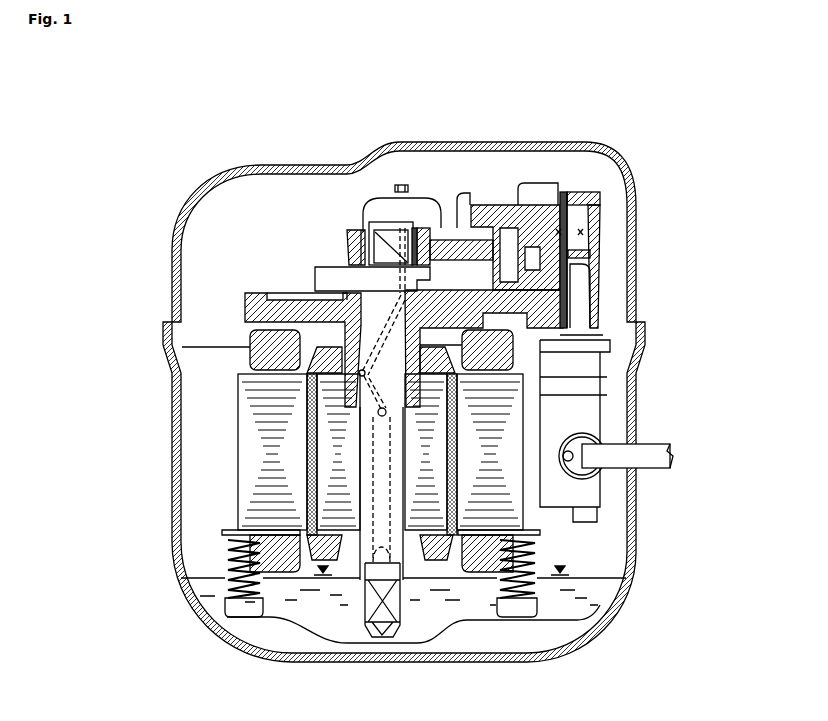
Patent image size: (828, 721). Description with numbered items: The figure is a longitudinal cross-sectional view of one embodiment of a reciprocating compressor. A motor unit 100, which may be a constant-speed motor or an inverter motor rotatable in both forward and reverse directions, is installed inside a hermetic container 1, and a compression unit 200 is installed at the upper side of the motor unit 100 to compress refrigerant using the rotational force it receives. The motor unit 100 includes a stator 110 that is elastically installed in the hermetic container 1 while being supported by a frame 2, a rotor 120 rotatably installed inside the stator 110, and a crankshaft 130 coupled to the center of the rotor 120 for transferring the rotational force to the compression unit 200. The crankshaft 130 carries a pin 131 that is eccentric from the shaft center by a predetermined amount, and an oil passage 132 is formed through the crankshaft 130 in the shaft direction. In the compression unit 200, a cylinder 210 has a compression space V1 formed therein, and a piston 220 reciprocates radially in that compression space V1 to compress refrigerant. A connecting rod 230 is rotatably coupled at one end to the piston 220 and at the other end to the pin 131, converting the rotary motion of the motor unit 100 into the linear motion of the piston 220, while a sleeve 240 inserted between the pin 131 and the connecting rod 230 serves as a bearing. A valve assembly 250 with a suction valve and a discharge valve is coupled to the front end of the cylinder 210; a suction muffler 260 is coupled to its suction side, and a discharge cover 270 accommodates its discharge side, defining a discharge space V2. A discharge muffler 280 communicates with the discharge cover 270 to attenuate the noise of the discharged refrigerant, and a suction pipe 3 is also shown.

The hermetic container 1 is at (222, 188).
The frame 2 is at (250, 355).
The suction pipe 3 is at (645, 446).
The motor unit 100 is at (299, 464).
The stator 110 is at (250, 453).
The rotor 120 is at (320, 479).
The crankshaft 130 is at (266, 464).
The pin 131 is at (378, 252).
The oil passage 132 is at (363, 580).
The compression unit 200 is at (505, 212).
The cylinder 210 is at (464, 215).
The piston 220 is at (532, 222).
The connecting rod 230 is at (447, 240).
The sleeve 240 is at (415, 226).
The valve assembly 250 is at (563, 226).
The suction muffler 260 is at (610, 345).
The discharge cover 270 is at (580, 200).
The discharge muffler 280 is at (382, 200).
The compression space V1 is at (561, 232).
The discharge space V2 is at (586, 232).